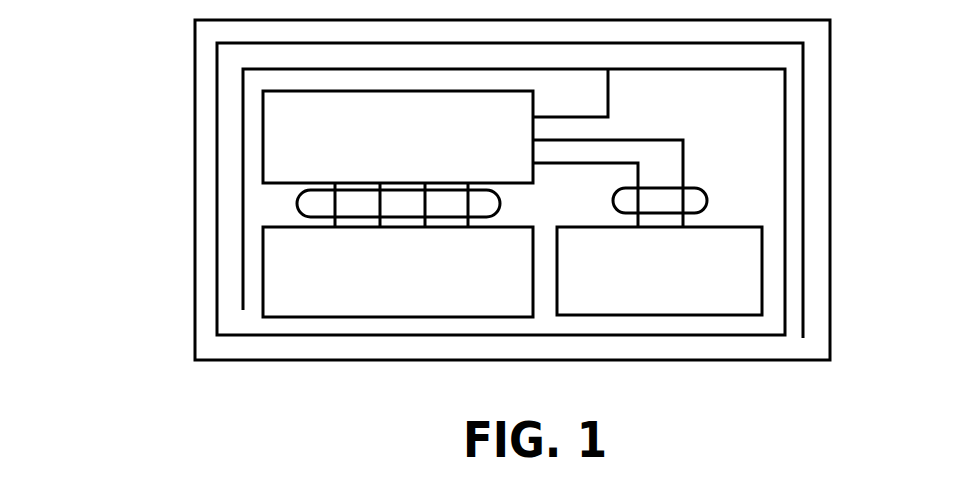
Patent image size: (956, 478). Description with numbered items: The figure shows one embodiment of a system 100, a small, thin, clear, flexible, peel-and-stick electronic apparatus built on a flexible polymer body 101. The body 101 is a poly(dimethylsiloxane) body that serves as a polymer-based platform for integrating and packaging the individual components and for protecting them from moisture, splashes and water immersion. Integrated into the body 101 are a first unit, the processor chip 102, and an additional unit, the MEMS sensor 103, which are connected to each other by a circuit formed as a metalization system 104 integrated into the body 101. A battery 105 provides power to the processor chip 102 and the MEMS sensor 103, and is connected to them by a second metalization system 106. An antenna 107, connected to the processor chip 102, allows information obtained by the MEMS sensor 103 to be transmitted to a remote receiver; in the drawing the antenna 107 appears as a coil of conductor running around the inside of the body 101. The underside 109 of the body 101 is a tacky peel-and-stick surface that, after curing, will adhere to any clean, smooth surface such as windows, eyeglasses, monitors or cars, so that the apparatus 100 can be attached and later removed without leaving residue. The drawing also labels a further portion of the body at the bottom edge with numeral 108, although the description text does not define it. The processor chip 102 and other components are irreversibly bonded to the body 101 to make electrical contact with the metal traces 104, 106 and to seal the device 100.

The system 100 is at (113, 59).
The flexible polymer body 101 is at (205, 183).
The processor chip 102 is at (419, 155).
The MEMS sensor 103 is at (424, 293).
The metalization system 104 is at (297, 200).
The battery 105 is at (659, 271).
The metalization system 106 is at (691, 188).
The antenna 107 is at (695, 336).
The housing bottom wall 108 is at (398, 361).
The underside surface 109 is at (237, 378).